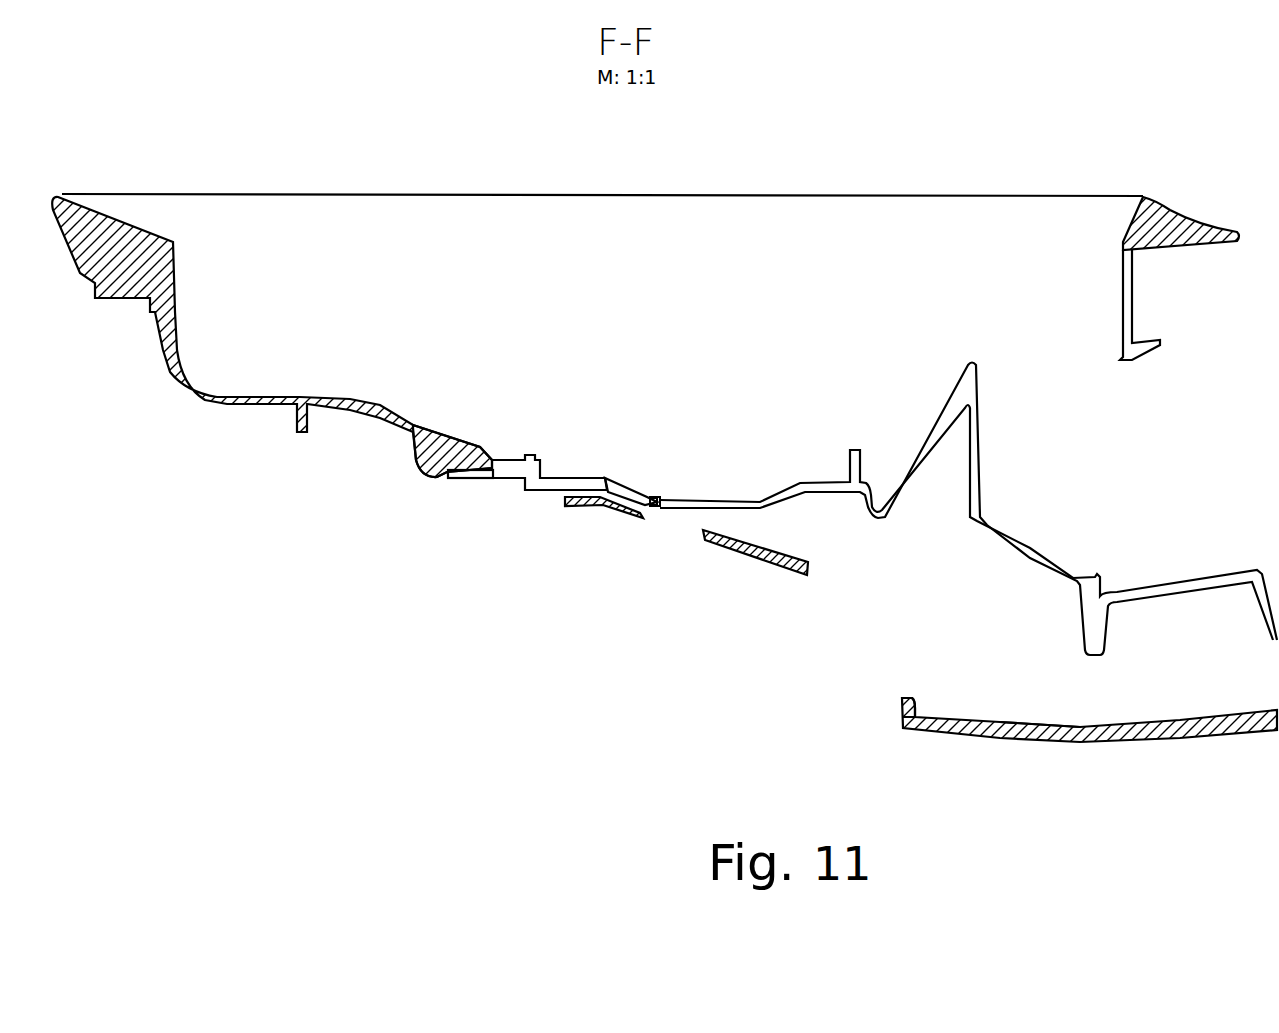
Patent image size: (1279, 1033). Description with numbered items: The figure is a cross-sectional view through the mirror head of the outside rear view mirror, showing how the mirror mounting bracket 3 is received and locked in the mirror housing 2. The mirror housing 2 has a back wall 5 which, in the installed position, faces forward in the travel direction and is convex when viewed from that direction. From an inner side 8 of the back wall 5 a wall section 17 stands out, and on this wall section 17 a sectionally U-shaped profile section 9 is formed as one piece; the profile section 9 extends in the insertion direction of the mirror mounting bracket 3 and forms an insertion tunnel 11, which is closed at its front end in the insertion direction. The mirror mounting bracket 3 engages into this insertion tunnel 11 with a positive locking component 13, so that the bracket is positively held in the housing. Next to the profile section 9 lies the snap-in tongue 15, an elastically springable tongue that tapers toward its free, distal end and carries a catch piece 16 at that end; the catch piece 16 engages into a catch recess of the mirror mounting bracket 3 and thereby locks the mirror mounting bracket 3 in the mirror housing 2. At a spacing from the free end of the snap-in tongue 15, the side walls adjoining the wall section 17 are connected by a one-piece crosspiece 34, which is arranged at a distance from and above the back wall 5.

The profile section 9 is at (325, 337).
The insertion tunnel 11 is at (477, 447).
The positive locking component 13 is at (473, 470).
The snap-in tongue 15 is at (627, 497).
The catch piece 16 is at (655, 505).
The wall section 17 is at (660, 497).
The mirror mounting bracket 3 is at (818, 481).
The crosspiece 34 is at (770, 567).
The back wall 5 is at (1089, 677).
The inner side 8 is at (933, 717).
The mirror housing 2 is at (1035, 706).